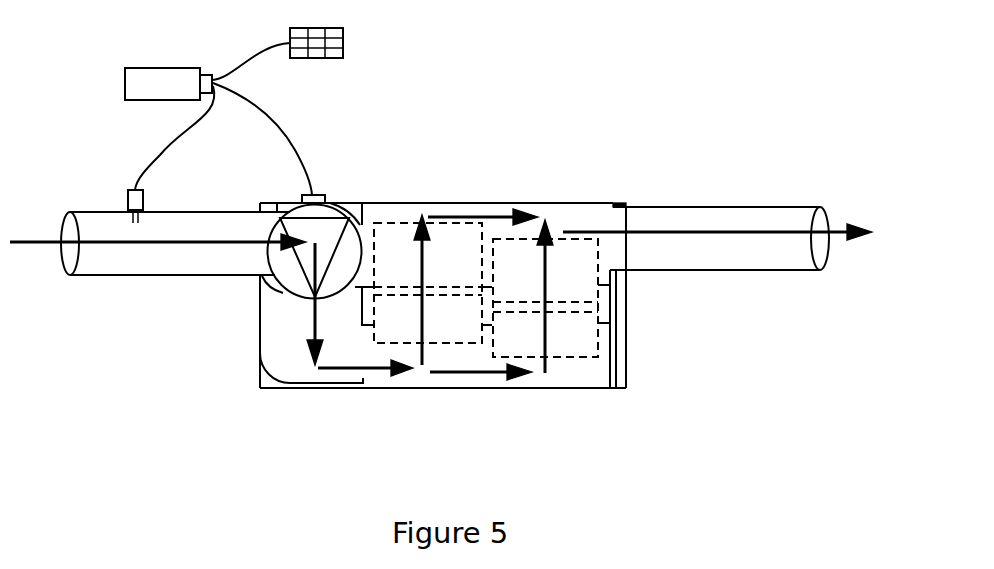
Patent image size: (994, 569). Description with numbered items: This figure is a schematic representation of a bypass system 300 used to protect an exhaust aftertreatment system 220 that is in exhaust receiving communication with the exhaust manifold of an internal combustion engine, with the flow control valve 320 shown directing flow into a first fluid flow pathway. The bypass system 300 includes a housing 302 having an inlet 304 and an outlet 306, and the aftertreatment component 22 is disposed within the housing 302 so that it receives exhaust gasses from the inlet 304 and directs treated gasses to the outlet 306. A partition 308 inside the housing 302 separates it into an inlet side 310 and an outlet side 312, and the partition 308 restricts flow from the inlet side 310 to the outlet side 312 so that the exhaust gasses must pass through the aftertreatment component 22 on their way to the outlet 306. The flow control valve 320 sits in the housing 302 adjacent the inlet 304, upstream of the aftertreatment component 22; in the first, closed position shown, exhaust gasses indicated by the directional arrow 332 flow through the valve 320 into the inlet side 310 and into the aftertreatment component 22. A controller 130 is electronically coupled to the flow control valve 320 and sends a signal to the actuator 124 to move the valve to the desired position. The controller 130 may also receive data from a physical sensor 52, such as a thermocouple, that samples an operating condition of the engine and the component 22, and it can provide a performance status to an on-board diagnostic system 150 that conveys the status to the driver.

The bypass system 300 is at (716, 40).
The controller 130 is at (127, 38).
The on-board diagnostic system 150 is at (153, 68).
The physical sensor 52 is at (133, 190).
The actuator 124 is at (322, 195).
The inlet 304 is at (272, 203).
The directional arrow 332 is at (157, 243).
The aftertreatment component 22 is at (398, 222).
The outlet side 312 is at (563, 212).
The outlet 306 is at (625, 207).
The flow control valve 320 is at (290, 262).
The exhaust aftertreatment system 220 is at (288, 414).
The housing 302 is at (388, 390).
The partition 308 is at (602, 327).
The inlet side 310 is at (567, 373).